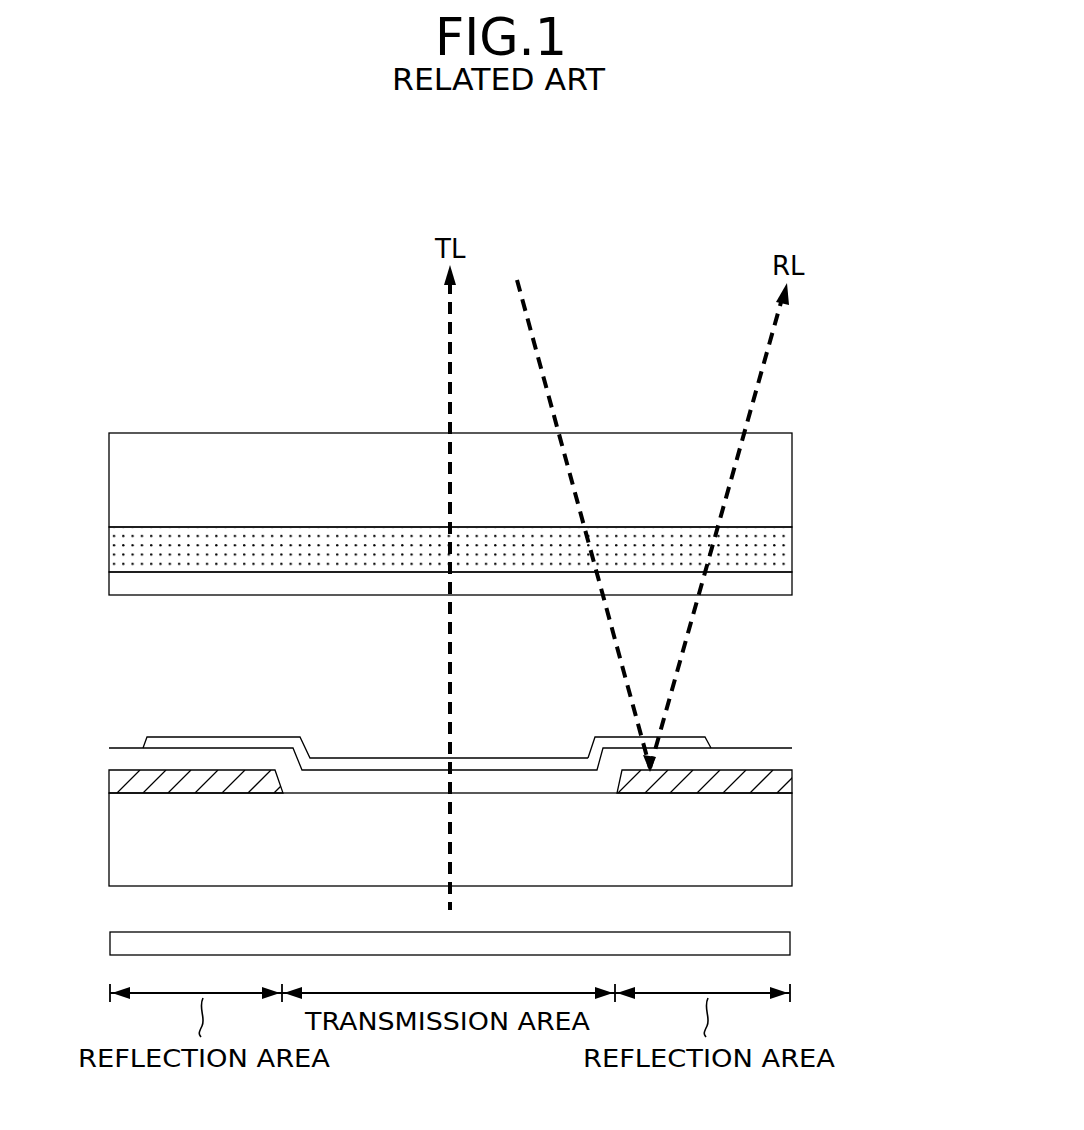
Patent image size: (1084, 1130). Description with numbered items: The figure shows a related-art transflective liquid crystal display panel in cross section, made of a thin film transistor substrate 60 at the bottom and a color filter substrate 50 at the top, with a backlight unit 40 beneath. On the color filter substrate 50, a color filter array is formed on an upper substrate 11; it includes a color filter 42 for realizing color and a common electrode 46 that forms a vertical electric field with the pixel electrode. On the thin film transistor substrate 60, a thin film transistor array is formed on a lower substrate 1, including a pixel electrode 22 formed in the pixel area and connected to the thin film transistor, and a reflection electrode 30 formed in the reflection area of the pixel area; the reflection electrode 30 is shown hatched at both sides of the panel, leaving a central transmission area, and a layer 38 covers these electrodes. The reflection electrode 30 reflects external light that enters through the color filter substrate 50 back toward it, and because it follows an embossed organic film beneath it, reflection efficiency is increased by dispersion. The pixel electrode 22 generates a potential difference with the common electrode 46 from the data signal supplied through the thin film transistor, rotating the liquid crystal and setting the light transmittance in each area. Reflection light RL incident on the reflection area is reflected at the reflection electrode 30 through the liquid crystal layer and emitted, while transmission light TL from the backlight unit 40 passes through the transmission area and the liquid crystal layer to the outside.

The lower substrate 1 is at (779, 837).
The upper substrate 11 is at (779, 469).
The pixel electrode 22 is at (695, 742).
The reflection electrode 30 is at (779, 784).
The passivation layer 38 is at (487, 729).
The backlight unit 40 is at (779, 945).
The color filter 42 is at (779, 547).
The common electrode 46 is at (779, 587).
The color filter substrate 50 is at (517, 519).
The thin film transistor substrate 60 is at (515, 784).